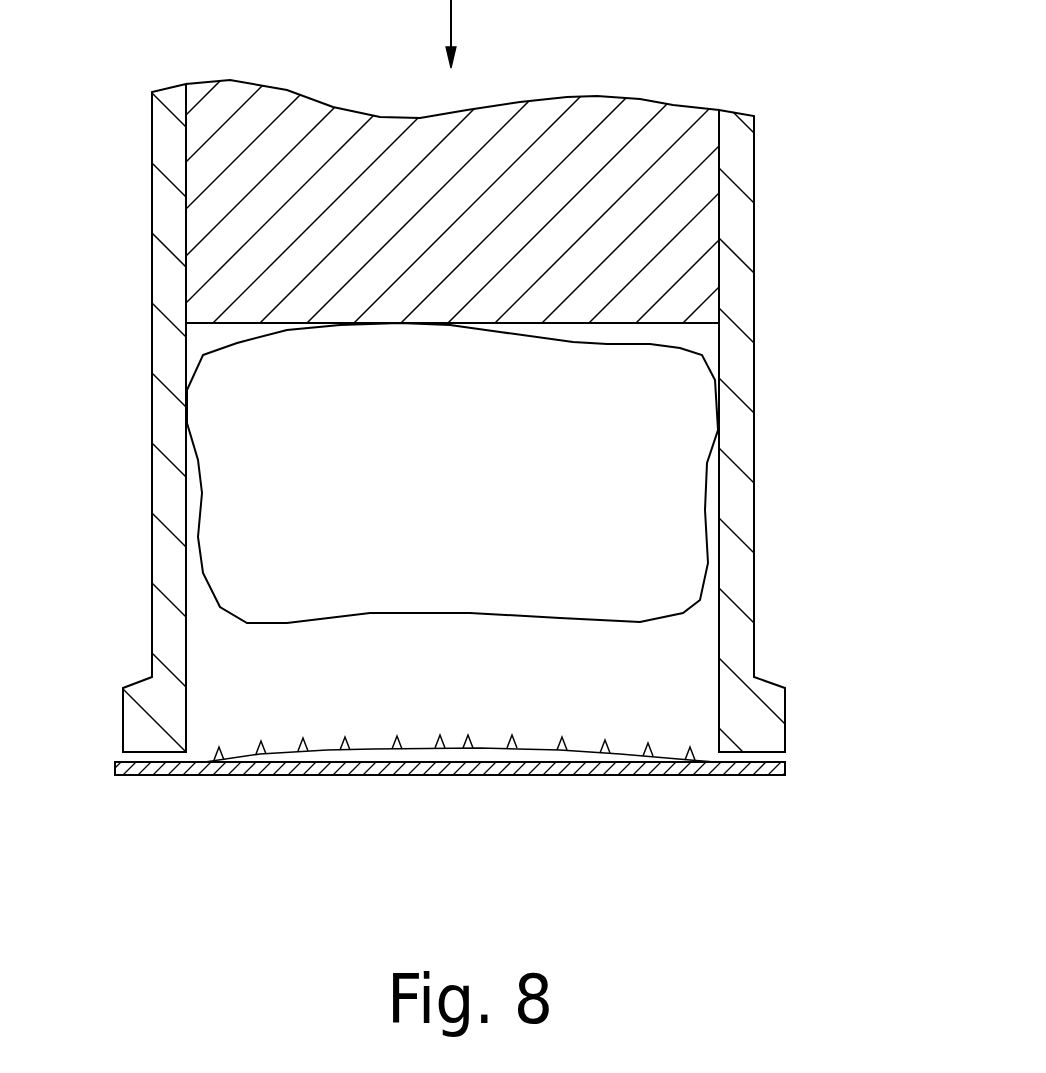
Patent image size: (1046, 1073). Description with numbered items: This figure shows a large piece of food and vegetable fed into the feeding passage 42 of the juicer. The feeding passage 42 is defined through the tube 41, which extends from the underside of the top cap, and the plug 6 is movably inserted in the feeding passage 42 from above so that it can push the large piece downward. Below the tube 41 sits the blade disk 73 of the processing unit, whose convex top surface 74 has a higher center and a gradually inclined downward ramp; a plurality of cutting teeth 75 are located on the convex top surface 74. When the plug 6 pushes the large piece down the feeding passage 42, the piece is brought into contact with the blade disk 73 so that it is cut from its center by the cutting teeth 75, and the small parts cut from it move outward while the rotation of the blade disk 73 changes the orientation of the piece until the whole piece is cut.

The plug 6 is at (690, 192).
The tube 41 is at (737, 375).
The feeding passage 42 is at (655, 667).
The blade disk 73 is at (750, 770).
The convex top surface 74 is at (327, 752).
The cutting teeth 75 is at (605, 743).